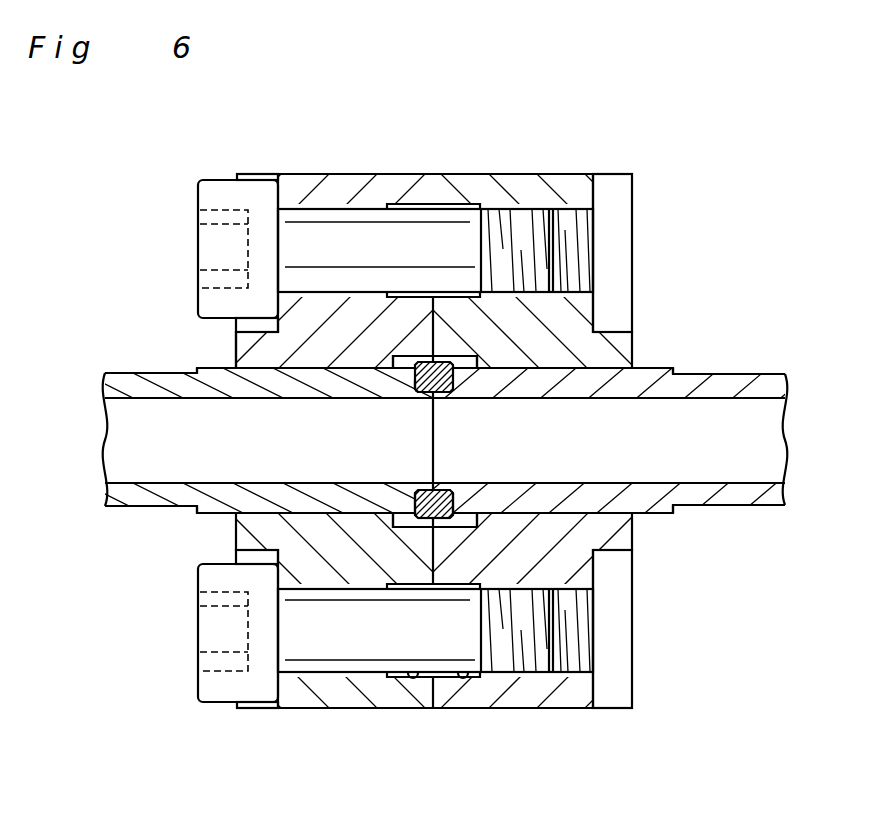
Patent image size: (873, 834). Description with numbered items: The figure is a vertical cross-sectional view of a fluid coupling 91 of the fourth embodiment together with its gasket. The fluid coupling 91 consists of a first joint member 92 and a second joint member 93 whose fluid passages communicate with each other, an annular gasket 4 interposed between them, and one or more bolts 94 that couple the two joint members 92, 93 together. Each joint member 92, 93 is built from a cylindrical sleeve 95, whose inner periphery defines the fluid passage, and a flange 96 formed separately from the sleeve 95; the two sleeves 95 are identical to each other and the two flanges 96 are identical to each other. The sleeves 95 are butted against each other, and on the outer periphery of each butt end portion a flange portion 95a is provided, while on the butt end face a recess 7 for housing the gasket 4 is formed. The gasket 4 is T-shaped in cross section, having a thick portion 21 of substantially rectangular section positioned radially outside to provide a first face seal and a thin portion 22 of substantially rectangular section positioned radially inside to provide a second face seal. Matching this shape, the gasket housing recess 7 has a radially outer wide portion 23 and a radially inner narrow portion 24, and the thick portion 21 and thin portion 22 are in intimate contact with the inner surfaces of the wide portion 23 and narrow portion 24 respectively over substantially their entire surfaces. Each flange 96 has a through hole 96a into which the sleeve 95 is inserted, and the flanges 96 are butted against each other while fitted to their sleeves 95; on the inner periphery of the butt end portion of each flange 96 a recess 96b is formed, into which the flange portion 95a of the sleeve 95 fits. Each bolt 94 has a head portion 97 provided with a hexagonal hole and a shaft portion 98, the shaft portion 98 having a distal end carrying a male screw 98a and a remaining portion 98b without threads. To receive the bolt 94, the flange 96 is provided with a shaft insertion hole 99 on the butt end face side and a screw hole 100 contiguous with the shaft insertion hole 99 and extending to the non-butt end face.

The gasket 4 is at (447, 366).
The recess 7 is at (420, 390).
The thick portion 21 is at (437, 520).
The thin portion 22 is at (422, 520).
The wide portion 23 is at (460, 494).
The narrow portion 24 is at (441, 492).
The fluid coupling 91 is at (712, 270).
The first joint member 92 is at (153, 372).
The second joint member 93 is at (746, 372).
The bolt 94 is at (212, 190).
The sleeve 95 is at (222, 497).
The flange portion 95a is at (403, 515).
The flange 96 is at (313, 556).
The through hole 96a is at (237, 372).
The recess 96b is at (398, 368).
The head portion 97 is at (232, 178).
The shaft portion 98 is at (433, 237).
The male screw 98a is at (520, 215).
The remaining portion 98b is at (335, 237).
The shaft insertion hole 99 is at (415, 677).
The screw hole 100 is at (300, 674).